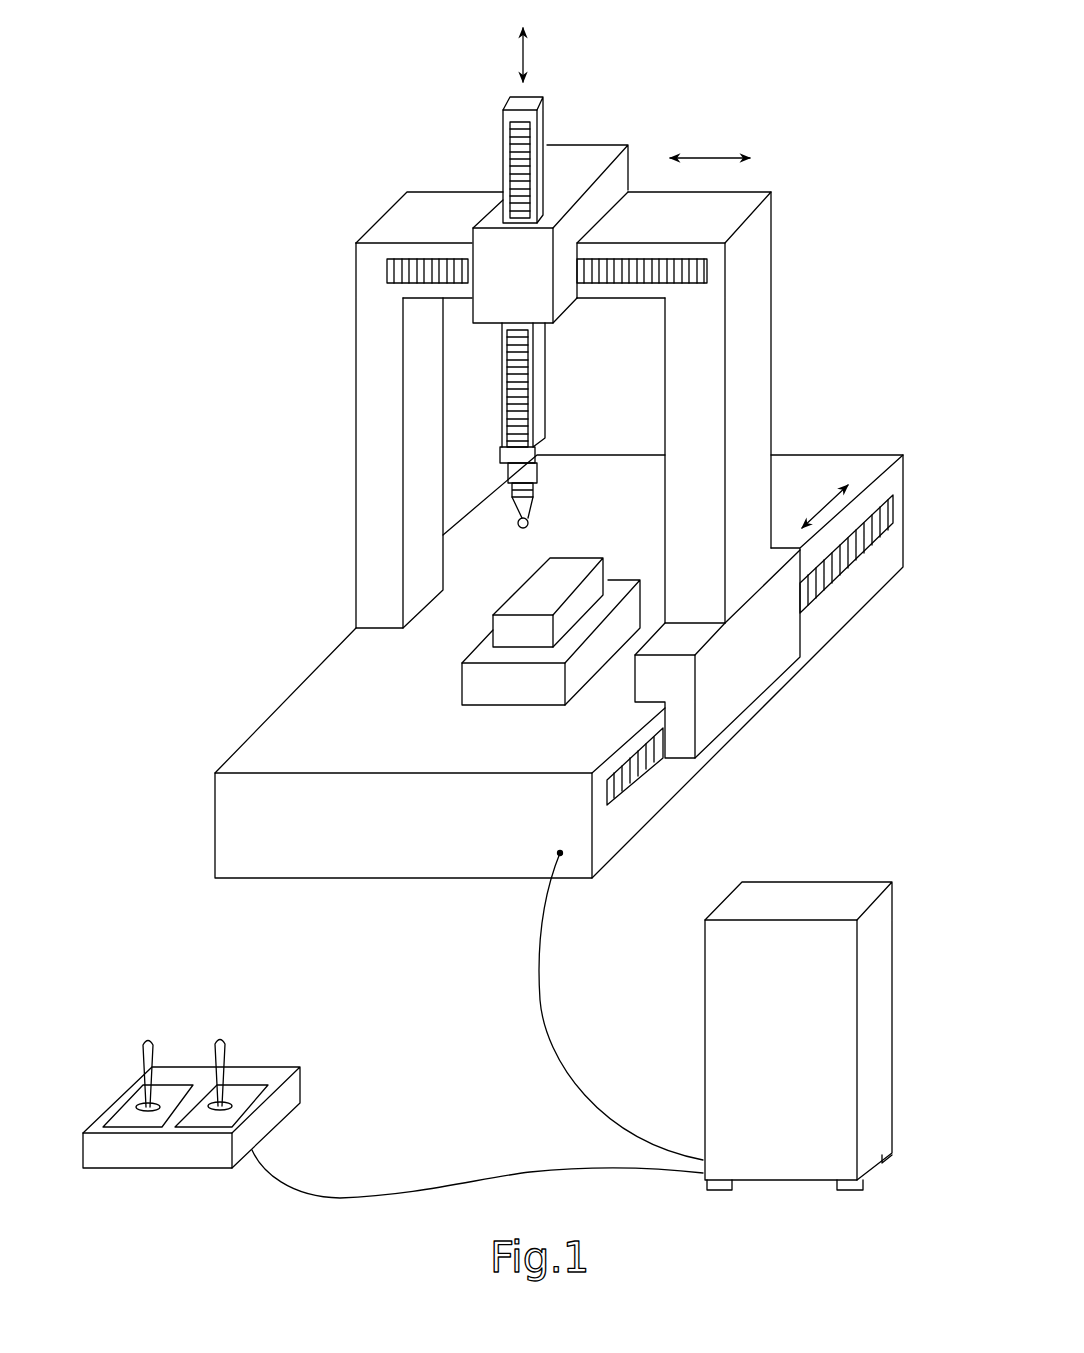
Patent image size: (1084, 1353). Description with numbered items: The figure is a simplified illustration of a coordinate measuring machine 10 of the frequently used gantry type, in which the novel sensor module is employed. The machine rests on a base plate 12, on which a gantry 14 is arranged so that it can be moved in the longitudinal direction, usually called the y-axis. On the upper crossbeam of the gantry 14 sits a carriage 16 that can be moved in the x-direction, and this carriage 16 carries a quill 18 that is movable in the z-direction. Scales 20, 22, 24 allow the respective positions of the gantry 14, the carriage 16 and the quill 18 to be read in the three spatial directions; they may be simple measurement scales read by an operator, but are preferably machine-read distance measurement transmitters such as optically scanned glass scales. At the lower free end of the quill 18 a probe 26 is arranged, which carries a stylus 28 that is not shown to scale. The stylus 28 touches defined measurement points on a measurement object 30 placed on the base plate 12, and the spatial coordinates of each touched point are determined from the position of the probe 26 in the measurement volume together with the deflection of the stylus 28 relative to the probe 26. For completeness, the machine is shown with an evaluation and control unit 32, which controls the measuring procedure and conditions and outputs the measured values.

The coordinate measuring machine 10 is at (553, 439).
The base plate 12 is at (265, 748).
The gantry 14 is at (372, 365).
The carriage 16 is at (492, 220).
The quill 18 is at (539, 253).
The scale 20 is at (843, 553).
The scale 22 is at (700, 270).
The scale 24 is at (540, 152).
The probe 26 is at (563, 458).
The stylus 28 is at (512, 510).
The measurement object 30 is at (532, 603).
The evaluation and control unit 32 is at (807, 905).